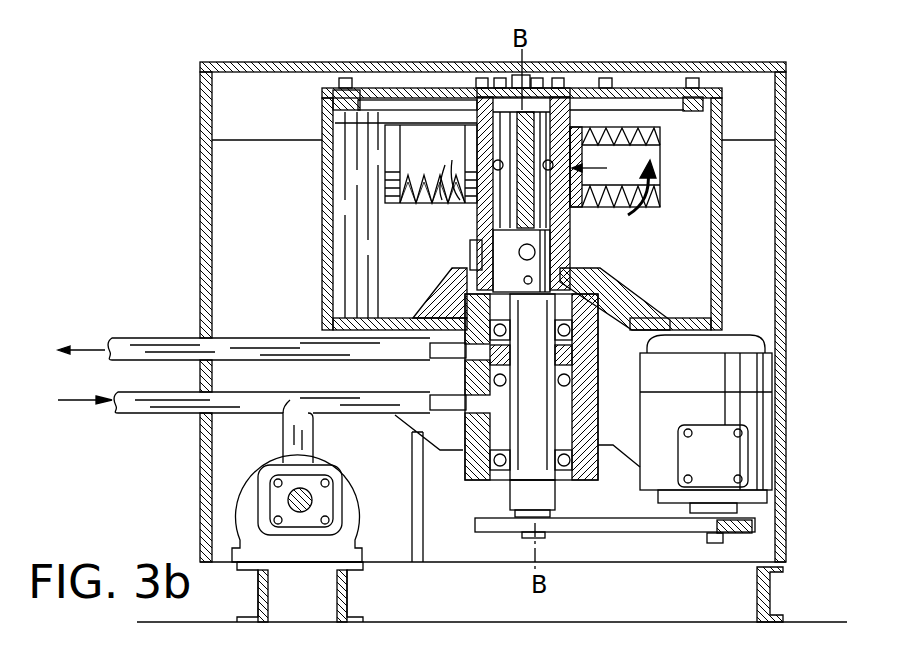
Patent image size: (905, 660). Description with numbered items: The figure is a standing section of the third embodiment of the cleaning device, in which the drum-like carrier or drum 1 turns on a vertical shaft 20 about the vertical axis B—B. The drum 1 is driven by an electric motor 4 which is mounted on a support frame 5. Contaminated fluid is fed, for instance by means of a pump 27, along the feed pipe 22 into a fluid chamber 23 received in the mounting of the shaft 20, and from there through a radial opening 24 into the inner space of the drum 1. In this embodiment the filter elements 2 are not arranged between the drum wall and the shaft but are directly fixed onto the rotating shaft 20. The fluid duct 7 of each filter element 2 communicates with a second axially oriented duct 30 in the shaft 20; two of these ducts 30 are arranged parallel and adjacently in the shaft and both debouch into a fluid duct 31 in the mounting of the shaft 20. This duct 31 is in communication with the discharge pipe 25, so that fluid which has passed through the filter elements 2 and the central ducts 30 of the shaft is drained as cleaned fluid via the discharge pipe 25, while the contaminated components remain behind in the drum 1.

The drum 1 is at (727, 232).
The filter elements 2 is at (455, 205).
The electric motor 4 is at (757, 452).
The support frame 5 is at (785, 574).
The fluid duct 7 is at (586, 128).
The vertical shaft 20 is at (552, 254).
The feed pipe 22 is at (383, 416).
The fluid chamber 23 is at (583, 408).
The radial opening 24 is at (488, 262).
The discharge pipe 25 is at (160, 350).
The pump 27 is at (248, 497).
The second axially oriented duct 30 is at (492, 110).
The fluid duct 31 is at (580, 364).